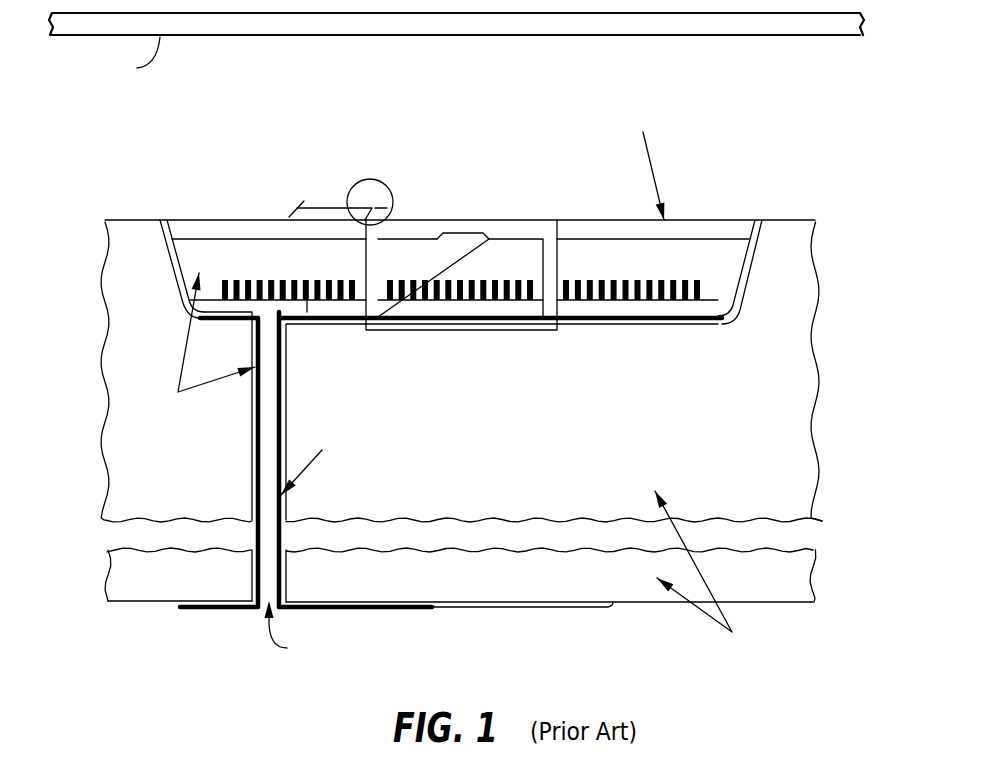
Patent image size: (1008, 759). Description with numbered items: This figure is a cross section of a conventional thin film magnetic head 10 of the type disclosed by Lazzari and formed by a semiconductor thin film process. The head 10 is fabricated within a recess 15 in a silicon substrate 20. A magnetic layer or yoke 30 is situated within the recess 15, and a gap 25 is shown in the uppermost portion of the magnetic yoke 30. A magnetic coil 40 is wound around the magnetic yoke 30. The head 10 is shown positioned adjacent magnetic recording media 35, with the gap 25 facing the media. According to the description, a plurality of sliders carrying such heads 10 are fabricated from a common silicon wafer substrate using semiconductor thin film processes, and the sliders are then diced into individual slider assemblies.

The head 10 is at (87, 218).
The recess 15 is at (735, 312).
The silicon substrate 20 is at (800, 427).
The gap 25 is at (459, 231).
The magnetic layer or yoke 30 is at (398, 322).
The magnetic recording media 35 is at (188, 37).
The magnetic coil 40 is at (590, 280).